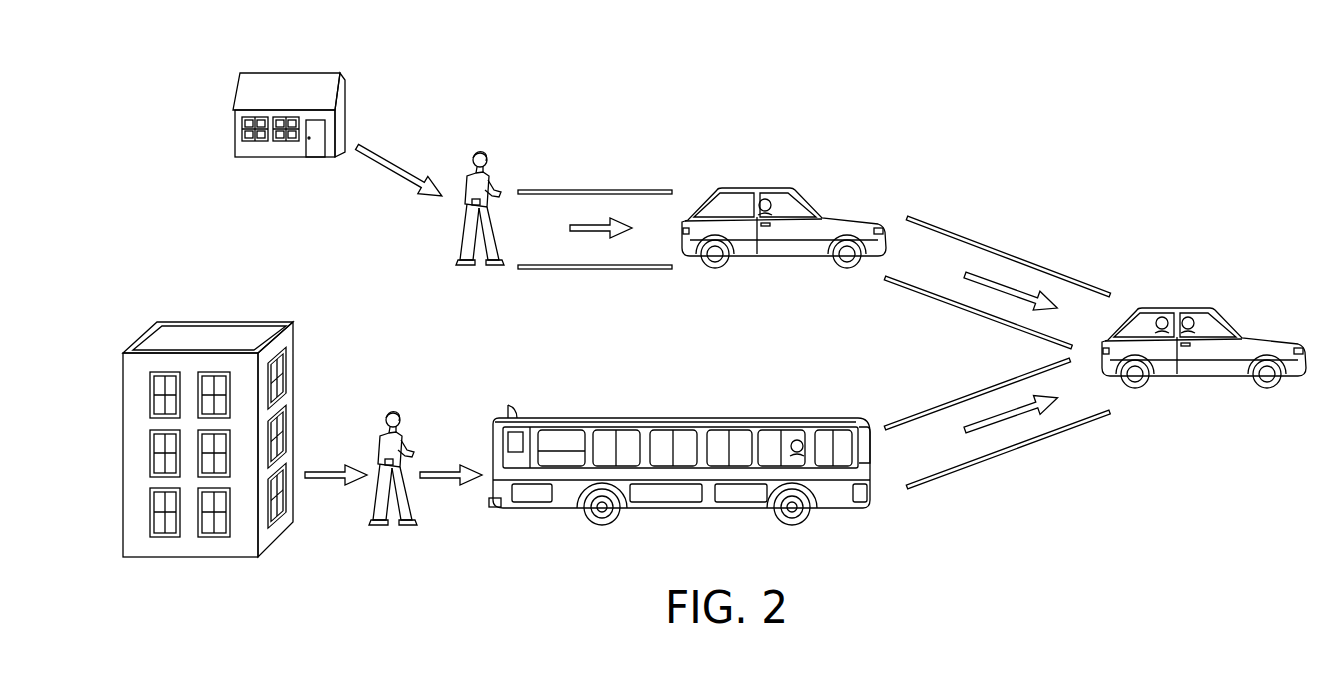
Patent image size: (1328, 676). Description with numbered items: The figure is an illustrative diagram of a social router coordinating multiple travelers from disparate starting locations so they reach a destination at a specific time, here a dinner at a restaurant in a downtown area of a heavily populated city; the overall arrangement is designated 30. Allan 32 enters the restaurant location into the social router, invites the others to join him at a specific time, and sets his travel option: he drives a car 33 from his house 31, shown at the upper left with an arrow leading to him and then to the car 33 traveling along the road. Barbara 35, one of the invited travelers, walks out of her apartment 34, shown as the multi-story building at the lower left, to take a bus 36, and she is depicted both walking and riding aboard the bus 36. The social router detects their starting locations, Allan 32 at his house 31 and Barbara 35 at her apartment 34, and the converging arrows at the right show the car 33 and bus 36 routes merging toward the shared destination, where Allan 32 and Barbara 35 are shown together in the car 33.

The communication environment 30 is at (717, 88).
The house 31 is at (281, 158).
The Allan 32 is at (478, 152).
The car 33 is at (833, 208).
The apartment 34 is at (140, 338).
The Barbara 35 is at (393, 412).
The bus 36 is at (657, 417).